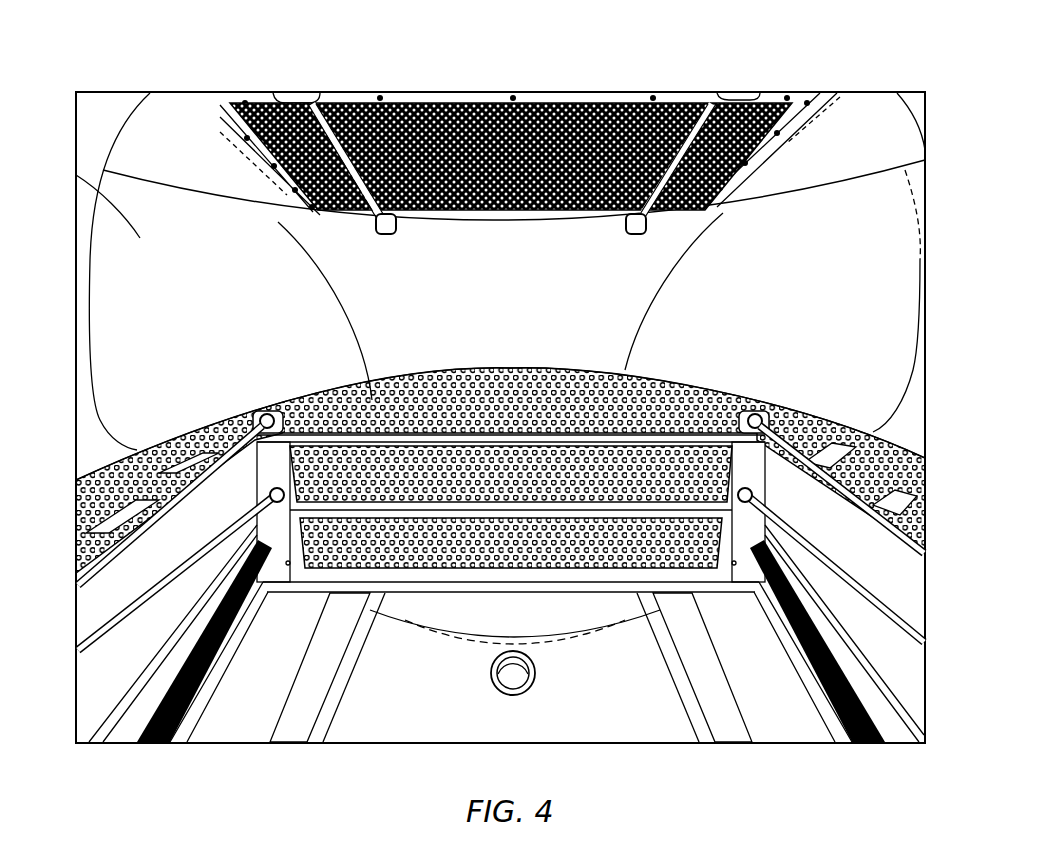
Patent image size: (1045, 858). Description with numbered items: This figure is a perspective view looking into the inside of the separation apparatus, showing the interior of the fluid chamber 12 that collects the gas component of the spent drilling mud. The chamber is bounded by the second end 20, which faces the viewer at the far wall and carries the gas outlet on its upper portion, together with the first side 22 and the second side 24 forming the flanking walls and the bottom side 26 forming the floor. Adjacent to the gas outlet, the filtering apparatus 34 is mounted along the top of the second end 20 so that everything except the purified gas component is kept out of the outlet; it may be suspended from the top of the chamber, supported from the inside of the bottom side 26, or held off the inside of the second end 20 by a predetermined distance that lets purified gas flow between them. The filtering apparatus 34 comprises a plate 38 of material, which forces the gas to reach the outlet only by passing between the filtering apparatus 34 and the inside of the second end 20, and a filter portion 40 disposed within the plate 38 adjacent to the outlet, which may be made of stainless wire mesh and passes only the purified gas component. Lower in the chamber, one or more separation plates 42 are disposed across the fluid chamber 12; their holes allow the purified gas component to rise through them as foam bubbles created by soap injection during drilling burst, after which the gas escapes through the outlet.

The fluid chamber 12 is at (135, 238).
The second end 20 is at (523, 310).
The first side 22 is at (920, 436).
The second side 24 is at (109, 436).
The bottom side 26 is at (523, 728).
The filtering apparatus 34 is at (521, 126).
The plate 38 is at (878, 117).
The filter portion 40 is at (622, 97).
The separation plate 42 is at (690, 395).